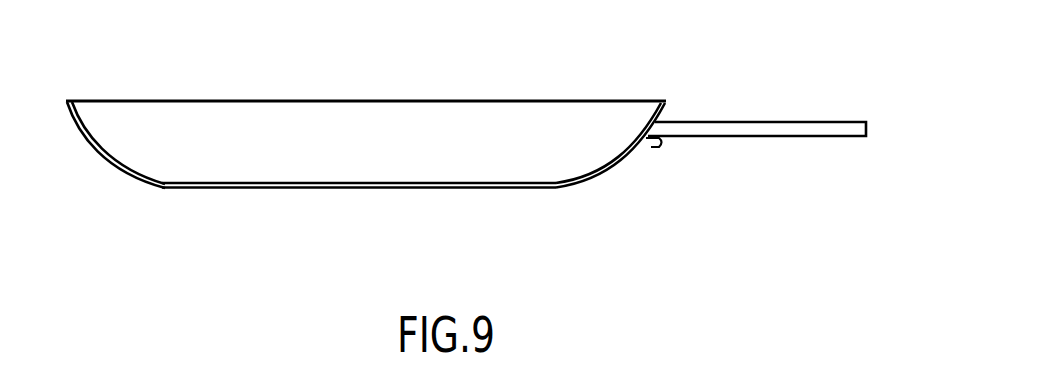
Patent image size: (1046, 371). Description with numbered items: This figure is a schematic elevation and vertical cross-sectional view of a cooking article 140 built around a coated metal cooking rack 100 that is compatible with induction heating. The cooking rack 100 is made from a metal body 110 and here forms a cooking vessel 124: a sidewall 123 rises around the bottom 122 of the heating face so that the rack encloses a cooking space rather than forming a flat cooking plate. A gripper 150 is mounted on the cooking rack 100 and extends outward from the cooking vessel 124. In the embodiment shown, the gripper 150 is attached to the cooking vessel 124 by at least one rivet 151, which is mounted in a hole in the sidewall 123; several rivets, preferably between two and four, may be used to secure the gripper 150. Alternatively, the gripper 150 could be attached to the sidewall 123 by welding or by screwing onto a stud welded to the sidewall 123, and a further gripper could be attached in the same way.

The coated metal cooking rack 100 is at (466, 144).
The metal body 110 is at (395, 219).
The bottom 122 is at (368, 189).
The sidewall 123 is at (628, 169).
The cooking vessel 124 is at (408, 130).
The cooking article 140 is at (527, 99).
The gripper 150 is at (756, 121).
The rivet 151 is at (658, 143).